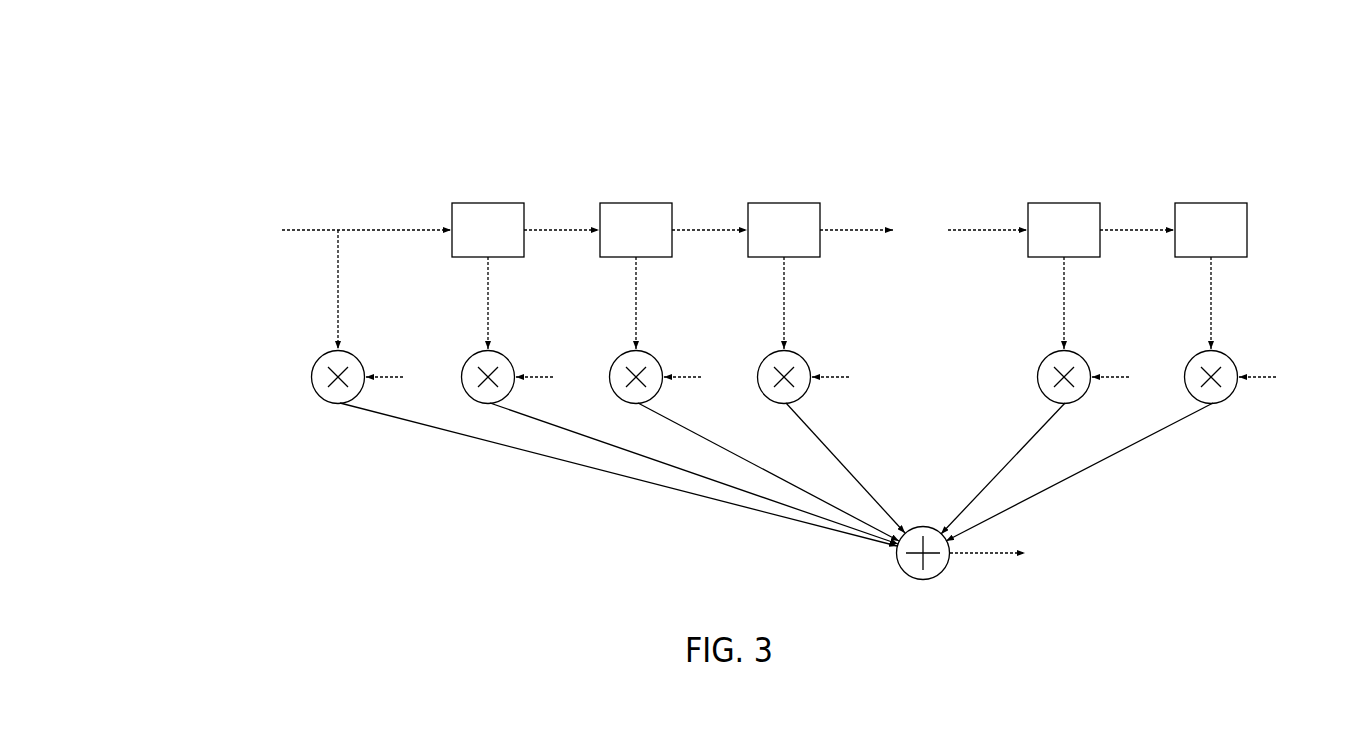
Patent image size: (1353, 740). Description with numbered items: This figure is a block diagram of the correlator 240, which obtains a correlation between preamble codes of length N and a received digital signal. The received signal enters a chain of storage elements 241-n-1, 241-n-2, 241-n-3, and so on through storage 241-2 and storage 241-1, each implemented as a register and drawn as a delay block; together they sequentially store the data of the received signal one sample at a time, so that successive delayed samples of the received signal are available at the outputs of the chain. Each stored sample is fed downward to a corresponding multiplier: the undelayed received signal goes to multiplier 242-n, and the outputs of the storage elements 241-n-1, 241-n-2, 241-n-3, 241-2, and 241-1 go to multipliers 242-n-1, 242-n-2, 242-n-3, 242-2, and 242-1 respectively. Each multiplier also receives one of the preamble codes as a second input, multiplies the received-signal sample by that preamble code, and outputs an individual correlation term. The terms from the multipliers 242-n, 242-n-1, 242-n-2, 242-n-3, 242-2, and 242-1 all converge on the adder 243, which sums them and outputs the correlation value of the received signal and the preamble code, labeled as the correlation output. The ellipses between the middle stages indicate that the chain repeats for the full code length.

The correlator 240 is at (1218, 72).
The storage 241-n-1 is at (487, 202).
The storage 241-n-2 is at (635, 202).
The storage 241-n-3 is at (783, 202).
The storage 241-2 is at (1063, 202).
The storage 241-1 is at (1210, 202).
The multiplier 242-n is at (353, 355).
The multiplier 242-n-1 is at (503, 355).
The multiplier 242-n-2 is at (651, 355).
The multiplier 242-n-3 is at (799, 355).
The multiplier 242-2 is at (1079, 355).
The multiplier 242-1 is at (1226, 355).
The adder 243 is at (923, 526).